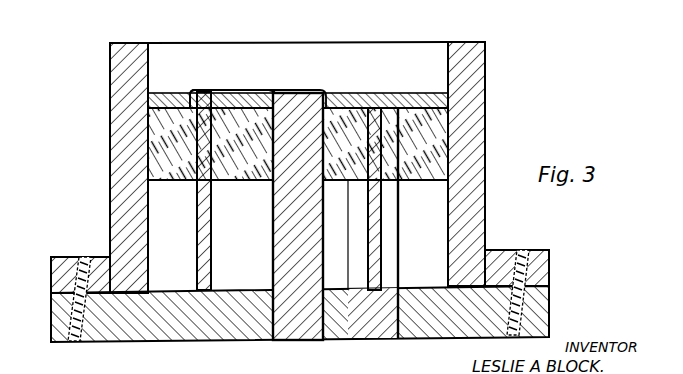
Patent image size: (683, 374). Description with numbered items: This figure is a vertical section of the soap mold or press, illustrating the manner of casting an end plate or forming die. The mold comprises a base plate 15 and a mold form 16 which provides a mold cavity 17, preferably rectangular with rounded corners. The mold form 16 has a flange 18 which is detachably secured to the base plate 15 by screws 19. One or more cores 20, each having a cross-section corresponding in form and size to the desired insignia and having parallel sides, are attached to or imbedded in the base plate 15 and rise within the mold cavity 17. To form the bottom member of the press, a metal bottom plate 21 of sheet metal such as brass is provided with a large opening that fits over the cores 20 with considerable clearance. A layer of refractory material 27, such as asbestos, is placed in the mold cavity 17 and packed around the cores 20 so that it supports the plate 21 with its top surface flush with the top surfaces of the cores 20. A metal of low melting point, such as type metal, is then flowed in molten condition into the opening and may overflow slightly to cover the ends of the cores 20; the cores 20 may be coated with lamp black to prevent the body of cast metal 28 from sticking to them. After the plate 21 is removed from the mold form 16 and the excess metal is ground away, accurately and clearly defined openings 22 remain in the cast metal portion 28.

The base plate 15 is at (159, 330).
The mold form 16 is at (123, 63).
The mold cavity 17 is at (152, 189).
The flange 18 is at (58, 268).
The screws 19 is at (68, 312).
The cores 20 is at (209, 228).
The bottom plate 21 is at (440, 98).
The openings 22 is at (268, 92).
The layer of refractory material 27 is at (437, 145).
The body of cast metal 28 is at (345, 92).